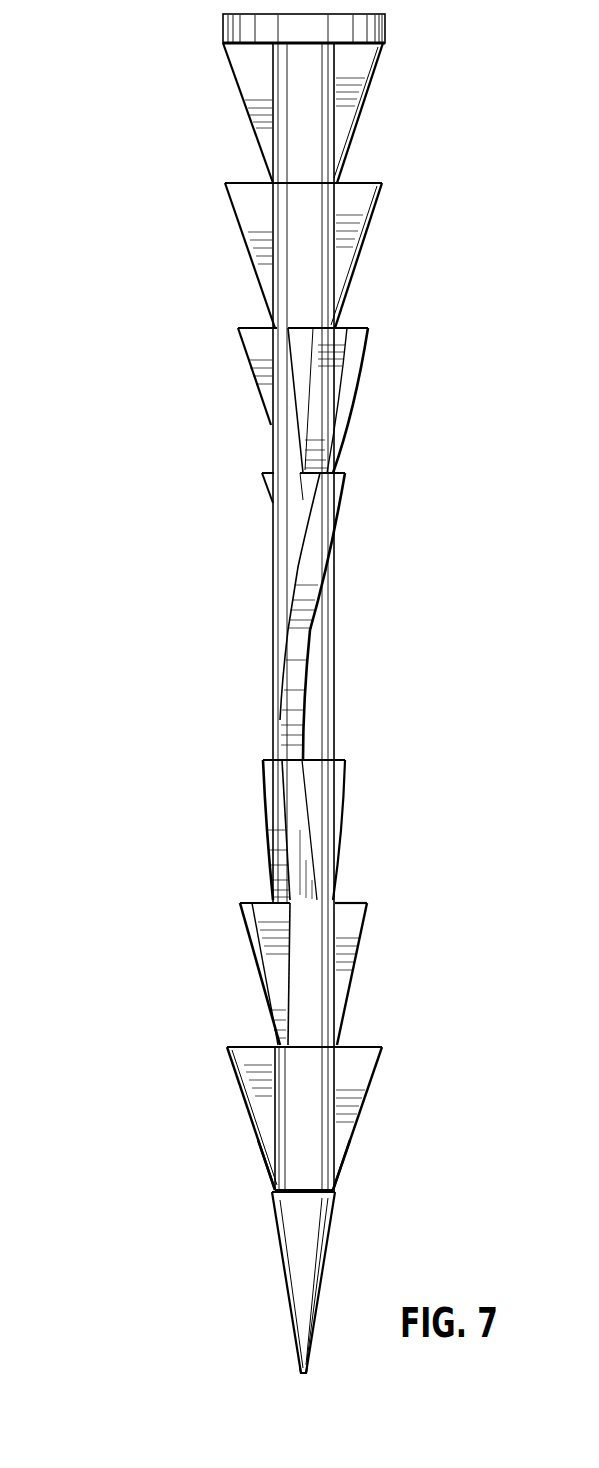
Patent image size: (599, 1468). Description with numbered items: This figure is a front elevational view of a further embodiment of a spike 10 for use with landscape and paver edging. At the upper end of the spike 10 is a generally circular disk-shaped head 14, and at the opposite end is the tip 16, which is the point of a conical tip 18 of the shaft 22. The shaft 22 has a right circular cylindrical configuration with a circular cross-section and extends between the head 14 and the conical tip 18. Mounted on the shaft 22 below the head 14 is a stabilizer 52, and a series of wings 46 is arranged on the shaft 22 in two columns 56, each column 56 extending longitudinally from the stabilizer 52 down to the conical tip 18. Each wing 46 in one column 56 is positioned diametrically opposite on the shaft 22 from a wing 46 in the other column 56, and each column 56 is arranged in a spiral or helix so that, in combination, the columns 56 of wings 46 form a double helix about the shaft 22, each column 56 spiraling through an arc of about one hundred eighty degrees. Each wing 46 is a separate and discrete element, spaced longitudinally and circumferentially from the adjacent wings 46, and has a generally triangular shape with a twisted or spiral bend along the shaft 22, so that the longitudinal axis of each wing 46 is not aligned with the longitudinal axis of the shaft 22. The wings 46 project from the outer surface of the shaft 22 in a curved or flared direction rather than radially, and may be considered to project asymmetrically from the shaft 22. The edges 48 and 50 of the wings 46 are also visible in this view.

The spike 10 is at (86, 272).
The head 14 is at (224, 28).
The tip 16 is at (306, 1374).
The conical tip section 18 is at (288, 1259).
The shaft 22 is at (333, 630).
The wings 46 is at (358, 373).
The blade top edge 48 is at (344, 327).
The blade inner edge 50 is at (336, 404).
The stabilizer 52 is at (245, 70).
The columns 56 is at (254, 1176).